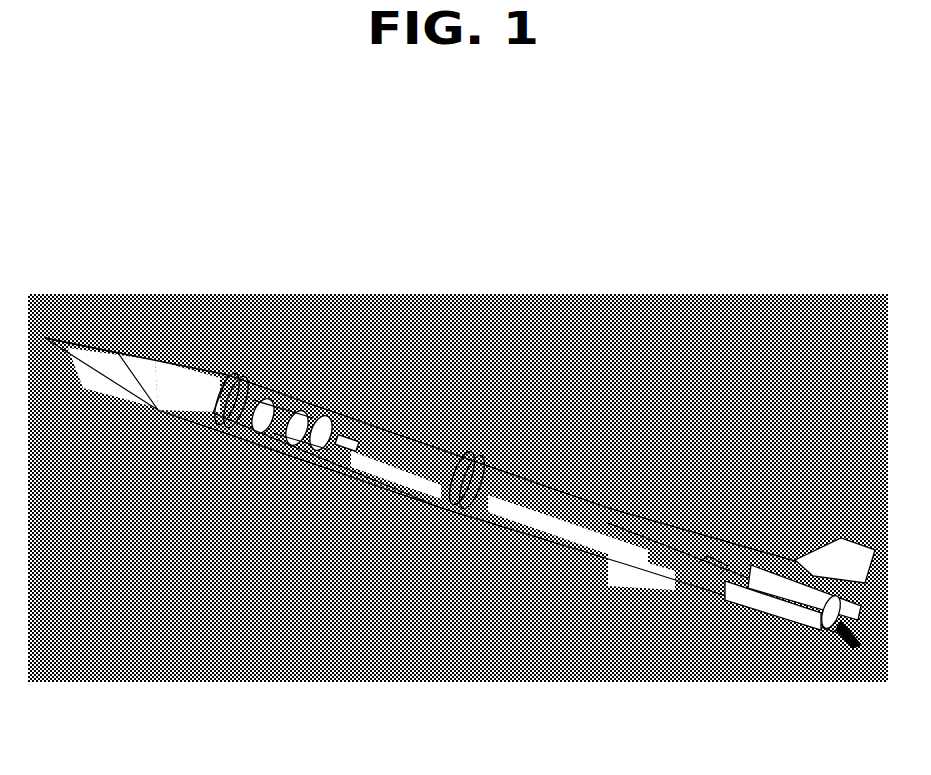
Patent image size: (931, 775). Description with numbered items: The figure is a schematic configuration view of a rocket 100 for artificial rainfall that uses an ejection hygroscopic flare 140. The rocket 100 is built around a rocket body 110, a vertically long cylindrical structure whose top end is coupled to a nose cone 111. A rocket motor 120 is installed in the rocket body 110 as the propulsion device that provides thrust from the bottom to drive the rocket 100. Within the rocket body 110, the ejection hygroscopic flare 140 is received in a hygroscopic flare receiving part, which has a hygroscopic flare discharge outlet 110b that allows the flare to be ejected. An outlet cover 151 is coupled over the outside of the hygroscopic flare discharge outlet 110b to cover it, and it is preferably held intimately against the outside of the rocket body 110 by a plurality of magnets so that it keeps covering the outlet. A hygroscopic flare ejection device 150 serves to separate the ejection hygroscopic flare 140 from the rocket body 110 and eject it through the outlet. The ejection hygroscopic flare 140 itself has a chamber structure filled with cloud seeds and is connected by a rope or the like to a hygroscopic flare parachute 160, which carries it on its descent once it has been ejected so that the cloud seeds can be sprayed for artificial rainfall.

The rocket for artificial rainfall 100 is at (432, 246).
The rocket body 110 is at (507, 428).
The hygroscopic flare discharge outlet 110b is at (260, 450).
The nose cone 111 is at (101, 355).
The rocket motor 120 is at (667, 577).
The ejection hygroscopic flare 140 is at (290, 445).
The hygroscopic flare ejection device 150 is at (233, 420).
The outlet cover 151 is at (276, 380).
The hygroscopic flare parachute 160 is at (338, 448).